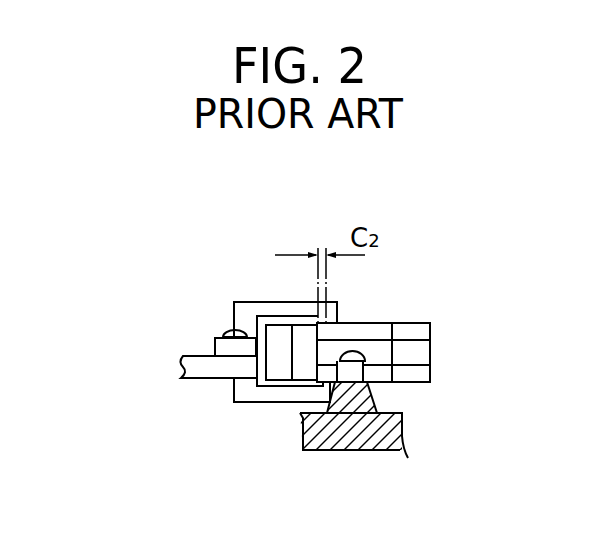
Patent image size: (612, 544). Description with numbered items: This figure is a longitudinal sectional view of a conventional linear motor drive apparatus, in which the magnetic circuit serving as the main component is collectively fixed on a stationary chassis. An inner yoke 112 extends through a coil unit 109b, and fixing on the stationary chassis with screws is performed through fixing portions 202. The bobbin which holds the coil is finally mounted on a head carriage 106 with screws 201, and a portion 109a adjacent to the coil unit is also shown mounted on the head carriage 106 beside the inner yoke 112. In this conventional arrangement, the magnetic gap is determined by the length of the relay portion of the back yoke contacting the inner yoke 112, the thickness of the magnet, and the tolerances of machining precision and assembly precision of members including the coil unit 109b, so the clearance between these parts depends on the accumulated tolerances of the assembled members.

The head carriage 106 is at (183, 376).
The first mounting block 109a is at (213, 346).
The coil unit 109b is at (340, 305).
The inner yoke 112 is at (275, 377).
The screws 201 is at (230, 327).
The fixing portions 202 is at (360, 351).